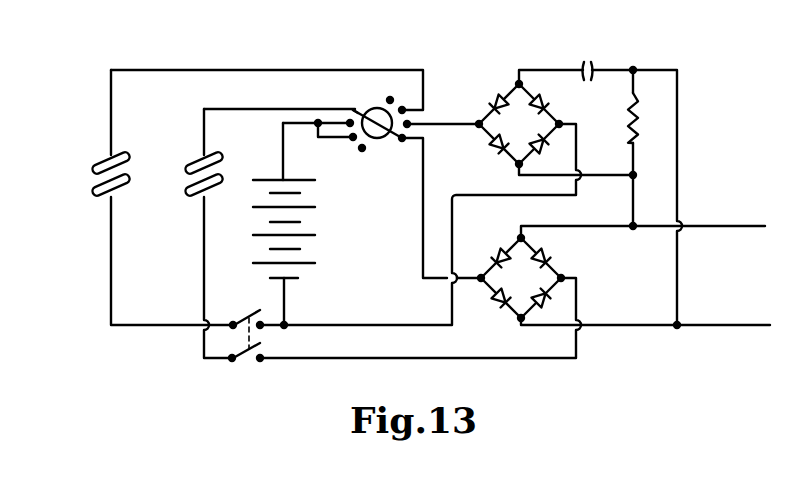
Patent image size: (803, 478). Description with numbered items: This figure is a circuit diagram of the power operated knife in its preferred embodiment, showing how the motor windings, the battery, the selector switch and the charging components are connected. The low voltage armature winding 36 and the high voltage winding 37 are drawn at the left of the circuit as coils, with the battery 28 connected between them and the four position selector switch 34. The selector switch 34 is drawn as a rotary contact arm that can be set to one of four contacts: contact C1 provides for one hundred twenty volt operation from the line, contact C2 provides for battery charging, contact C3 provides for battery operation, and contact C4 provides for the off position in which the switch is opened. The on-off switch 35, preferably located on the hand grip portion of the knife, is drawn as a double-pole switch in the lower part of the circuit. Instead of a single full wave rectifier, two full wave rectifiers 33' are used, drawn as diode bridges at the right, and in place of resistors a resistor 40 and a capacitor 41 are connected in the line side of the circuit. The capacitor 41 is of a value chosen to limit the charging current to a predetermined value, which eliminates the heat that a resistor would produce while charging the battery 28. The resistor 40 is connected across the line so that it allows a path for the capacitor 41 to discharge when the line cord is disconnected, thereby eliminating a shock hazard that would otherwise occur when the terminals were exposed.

The battery 28 is at (316, 236).
The full wave rectifier 33' is at (539, 187).
The selector switch 34 is at (376, 108).
The on-off switch 35 is at (243, 362).
The low voltage winding 36 is at (93, 178).
The high voltage winding 37 is at (200, 170).
The resistor 40 is at (637, 110).
The capacitor 41 is at (582, 62).
The contact C1 is at (356, 108).
The contact C2 is at (349, 126).
The contact C3 is at (353, 140).
The contact C4 is at (363, 151).